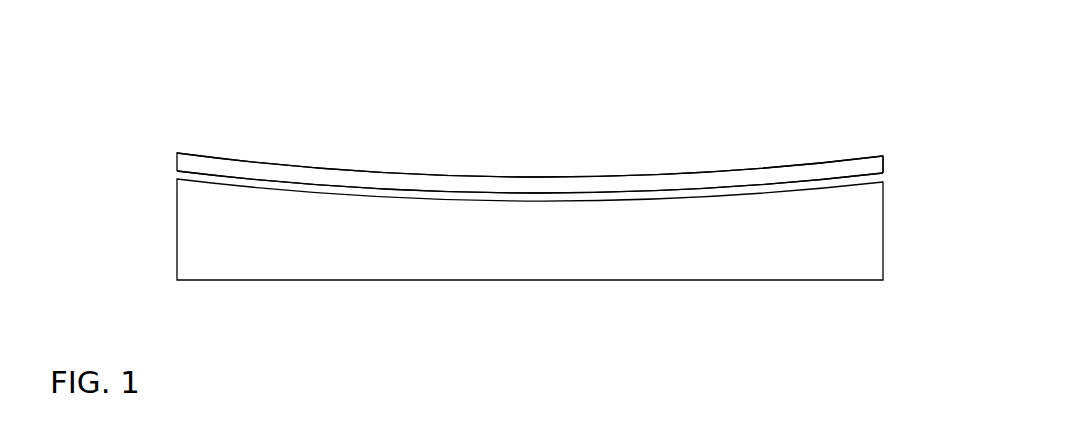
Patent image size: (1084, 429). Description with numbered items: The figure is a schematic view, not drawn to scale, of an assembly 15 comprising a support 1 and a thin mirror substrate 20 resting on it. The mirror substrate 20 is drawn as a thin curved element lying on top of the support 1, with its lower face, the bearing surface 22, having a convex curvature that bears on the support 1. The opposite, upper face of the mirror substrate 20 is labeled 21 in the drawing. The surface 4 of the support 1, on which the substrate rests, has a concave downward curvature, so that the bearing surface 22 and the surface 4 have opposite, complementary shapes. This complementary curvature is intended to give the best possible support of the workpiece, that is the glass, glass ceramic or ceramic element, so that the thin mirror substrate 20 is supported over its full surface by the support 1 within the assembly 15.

The assembly 15 is at (521, 77).
The support 1 is at (177, 218).
The mirror substrate 20 is at (552, 182).
The upper surface of layer 21 is at (323, 168).
The bearing surface 22 is at (365, 188).
The surface of the support 4 is at (852, 184).